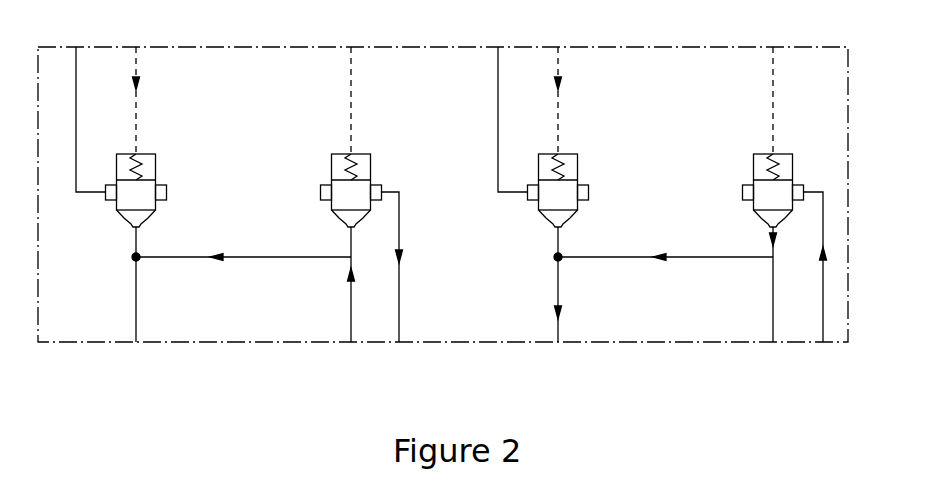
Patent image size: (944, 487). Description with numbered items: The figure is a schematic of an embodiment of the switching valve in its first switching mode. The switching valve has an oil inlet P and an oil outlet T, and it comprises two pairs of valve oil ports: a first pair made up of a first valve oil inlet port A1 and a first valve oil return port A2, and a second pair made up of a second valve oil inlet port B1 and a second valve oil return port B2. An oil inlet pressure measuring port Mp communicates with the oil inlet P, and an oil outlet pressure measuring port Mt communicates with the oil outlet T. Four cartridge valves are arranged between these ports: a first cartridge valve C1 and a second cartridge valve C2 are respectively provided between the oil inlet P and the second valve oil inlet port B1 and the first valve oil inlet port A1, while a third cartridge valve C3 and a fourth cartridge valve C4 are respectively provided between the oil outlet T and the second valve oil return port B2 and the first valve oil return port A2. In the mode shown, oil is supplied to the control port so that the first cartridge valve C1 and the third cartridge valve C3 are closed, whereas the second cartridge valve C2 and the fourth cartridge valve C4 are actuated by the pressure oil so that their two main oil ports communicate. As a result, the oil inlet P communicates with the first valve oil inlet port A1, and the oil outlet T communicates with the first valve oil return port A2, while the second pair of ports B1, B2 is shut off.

The second valve oil inlet port B1 is at (83, 104).
The second valve oil return port B2 is at (506, 104).
The first cartridge valve C1 is at (150, 137).
The second cartridge valve C2 is at (366, 137).
The third cartridge valve C3 is at (573, 137).
The fourth cartridge valve C4 is at (788, 137).
The oil inlet pressure measuring port Mp is at (237, 300).
The oil outlet pressure measuring port Mt is at (775, 300).
The oil inlet P is at (350, 300).
The oil outlet T is at (661, 300).
The first valve oil inlet port A1 is at (399, 282).
The first valve oil return port A2 is at (822, 282).